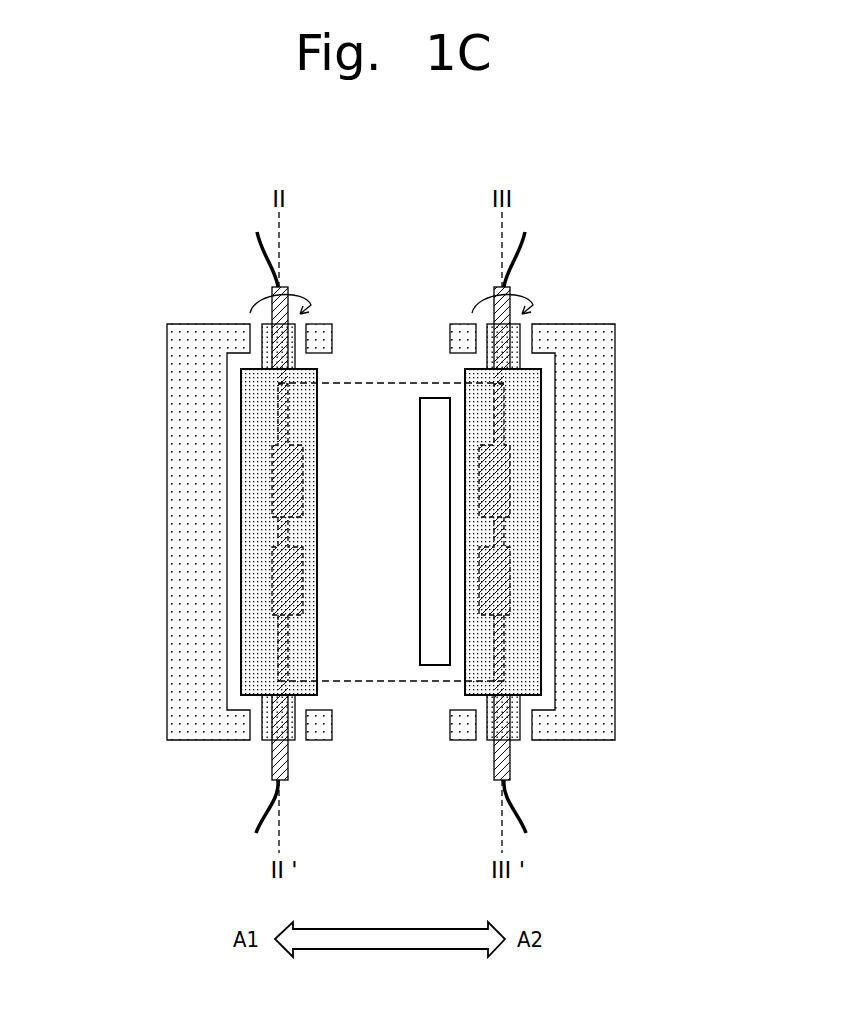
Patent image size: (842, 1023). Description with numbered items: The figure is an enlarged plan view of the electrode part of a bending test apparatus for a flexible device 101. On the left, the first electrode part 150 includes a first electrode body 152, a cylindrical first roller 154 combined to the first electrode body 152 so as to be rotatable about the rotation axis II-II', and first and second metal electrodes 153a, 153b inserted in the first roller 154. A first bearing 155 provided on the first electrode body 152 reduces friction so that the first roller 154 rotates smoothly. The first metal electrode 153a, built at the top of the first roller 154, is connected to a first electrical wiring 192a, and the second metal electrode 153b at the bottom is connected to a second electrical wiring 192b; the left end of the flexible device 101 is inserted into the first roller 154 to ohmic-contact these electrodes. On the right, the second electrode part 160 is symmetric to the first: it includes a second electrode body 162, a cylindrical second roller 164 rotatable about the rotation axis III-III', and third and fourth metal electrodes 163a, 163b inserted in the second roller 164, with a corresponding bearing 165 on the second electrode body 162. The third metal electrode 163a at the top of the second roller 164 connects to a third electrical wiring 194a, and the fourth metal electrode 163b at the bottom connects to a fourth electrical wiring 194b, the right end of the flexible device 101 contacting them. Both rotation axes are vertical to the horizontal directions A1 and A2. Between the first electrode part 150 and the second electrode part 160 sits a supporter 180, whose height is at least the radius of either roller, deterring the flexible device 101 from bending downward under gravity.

The first electrode part 150 is at (187, 530).
The first electrode body 152 is at (187, 552).
The first metal electrode 153a is at (272, 425).
The second metal electrode 153b is at (272, 625).
The first roller 154 is at (260, 488).
The first bearing 155 is at (257, 722).
The second electrode part 160 is at (596, 530).
The second electrode body 162 is at (595, 552).
The third metal electrode 163a is at (510, 425).
The fourth metal electrode 163b is at (510, 625).
The second roller 164 is at (522, 488).
The second fixing plate 165 is at (525, 722).
The supporter 180 is at (435, 408).
The flexible device 101 is at (390, 682).
The first electrical wiring 192a is at (257, 239).
The second electrical wiring 192b is at (257, 816).
The third electrical wiring 194a is at (526, 239).
The fourth electrical wiring 194b is at (526, 816).